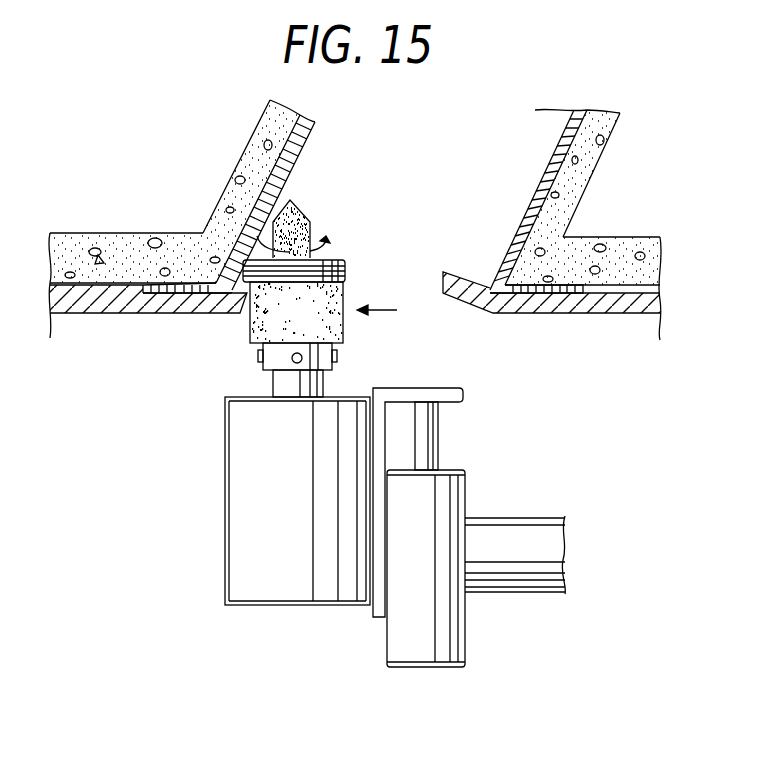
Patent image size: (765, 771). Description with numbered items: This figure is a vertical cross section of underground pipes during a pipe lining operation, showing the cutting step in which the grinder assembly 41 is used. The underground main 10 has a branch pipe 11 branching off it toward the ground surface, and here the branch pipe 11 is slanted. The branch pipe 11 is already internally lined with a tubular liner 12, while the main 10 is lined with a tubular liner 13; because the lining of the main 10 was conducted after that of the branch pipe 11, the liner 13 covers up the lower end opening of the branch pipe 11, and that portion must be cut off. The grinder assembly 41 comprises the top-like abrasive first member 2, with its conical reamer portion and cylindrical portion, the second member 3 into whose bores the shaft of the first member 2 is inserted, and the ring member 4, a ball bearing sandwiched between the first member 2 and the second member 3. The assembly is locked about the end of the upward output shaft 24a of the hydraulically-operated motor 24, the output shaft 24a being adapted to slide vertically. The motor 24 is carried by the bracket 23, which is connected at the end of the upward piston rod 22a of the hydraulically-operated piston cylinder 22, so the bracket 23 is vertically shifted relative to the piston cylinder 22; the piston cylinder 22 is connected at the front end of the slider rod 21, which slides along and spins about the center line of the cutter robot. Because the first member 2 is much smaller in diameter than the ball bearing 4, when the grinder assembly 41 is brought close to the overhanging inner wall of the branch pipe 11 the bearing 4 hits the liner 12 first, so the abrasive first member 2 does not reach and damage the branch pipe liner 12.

The first member 2 is at (305, 217).
The second member 3 is at (248, 332).
The ring member 4 is at (347, 268).
The underground main 10 is at (617, 237).
The branch pipe 11 is at (600, 162).
The tubular liner 12 is at (305, 150).
The tubular liner 13 is at (545, 315).
The slider rod 21 is at (517, 515).
The piston cylinder 22 is at (462, 637).
The piston rod 22a is at (441, 440).
The bracket 23 is at (415, 386).
The hydraulically-operated motor 24 is at (225, 567).
The output shaft 24a is at (272, 388).
The grinder assembly 41 is at (347, 247).